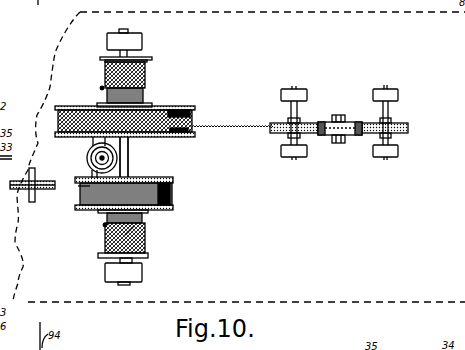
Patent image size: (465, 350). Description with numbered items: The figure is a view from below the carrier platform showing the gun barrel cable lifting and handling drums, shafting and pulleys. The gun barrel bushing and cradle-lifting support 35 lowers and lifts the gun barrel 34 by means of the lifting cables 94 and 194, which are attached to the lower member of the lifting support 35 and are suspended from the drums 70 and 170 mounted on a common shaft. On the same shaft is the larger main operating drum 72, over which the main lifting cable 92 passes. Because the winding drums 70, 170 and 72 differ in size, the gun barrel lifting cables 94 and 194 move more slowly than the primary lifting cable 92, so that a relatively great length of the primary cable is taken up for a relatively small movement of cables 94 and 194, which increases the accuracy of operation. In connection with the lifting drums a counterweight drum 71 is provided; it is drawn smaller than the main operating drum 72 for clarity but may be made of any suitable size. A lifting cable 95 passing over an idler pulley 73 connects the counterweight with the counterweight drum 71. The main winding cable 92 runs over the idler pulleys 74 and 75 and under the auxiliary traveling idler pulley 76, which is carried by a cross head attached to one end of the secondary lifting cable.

The cable 194 is at (102, 100).
The drum 170 is at (143, 99).
The main operating drum 72 is at (152, 132).
The main lifting cable 92 is at (190, 118).
The lifting support 35 is at (90, 146).
The gun barrel 34 is at (94, 160).
The lifting cable 95 is at (80, 192).
The idler pulley 73 is at (43, 191).
The counterweight drum 71 is at (172, 195).
The drum 70 is at (143, 218).
The lifting cable 94 is at (107, 239).
The idler pulley 74 is at (287, 131).
The idler pulley 75 is at (403, 133).
The auxiliary pulley 76 is at (327, 123).